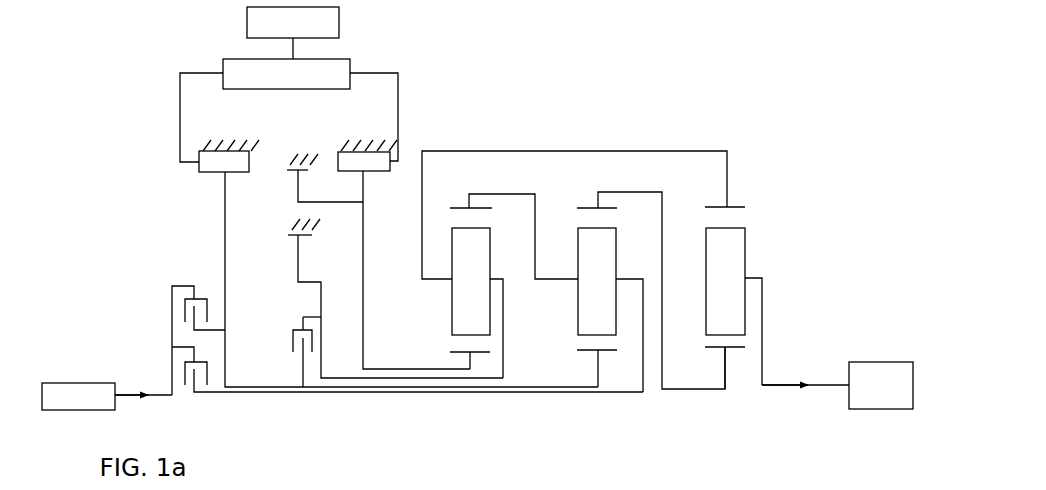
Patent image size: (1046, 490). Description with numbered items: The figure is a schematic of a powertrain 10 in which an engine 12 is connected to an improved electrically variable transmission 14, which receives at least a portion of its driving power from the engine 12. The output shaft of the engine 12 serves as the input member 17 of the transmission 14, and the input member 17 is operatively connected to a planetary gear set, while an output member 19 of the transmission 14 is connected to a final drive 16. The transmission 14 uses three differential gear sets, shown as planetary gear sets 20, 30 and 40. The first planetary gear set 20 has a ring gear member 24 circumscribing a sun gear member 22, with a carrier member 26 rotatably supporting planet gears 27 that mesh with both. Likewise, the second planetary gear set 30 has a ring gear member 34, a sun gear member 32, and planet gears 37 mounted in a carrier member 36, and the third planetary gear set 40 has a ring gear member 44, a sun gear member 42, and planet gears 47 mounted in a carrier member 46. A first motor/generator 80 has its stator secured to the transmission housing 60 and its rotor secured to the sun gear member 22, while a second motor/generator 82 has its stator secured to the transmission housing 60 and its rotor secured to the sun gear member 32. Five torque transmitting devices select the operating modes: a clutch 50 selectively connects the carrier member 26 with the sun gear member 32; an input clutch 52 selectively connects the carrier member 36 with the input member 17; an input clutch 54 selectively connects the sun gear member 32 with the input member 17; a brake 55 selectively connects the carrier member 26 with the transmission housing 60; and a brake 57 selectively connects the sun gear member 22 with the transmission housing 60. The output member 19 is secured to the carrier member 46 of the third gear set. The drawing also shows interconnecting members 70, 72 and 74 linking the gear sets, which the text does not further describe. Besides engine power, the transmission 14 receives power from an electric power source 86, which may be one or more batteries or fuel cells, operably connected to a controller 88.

The powertrain 10 is at (100, 170).
The engine 12 is at (72, 383).
The electrically variable transmission 14 is at (100, 222).
The final drive 16 is at (873, 361).
The input member 17 is at (125, 394).
The output member 19 is at (787, 388).
The first planetary gear set 20 is at (468, 355).
The sun gear member 22 is at (474, 355).
The ring gear member 24 is at (451, 207).
The carrier member 26 is at (492, 272).
The planet gears 27 is at (471, 281).
The second planetary gear set 30 is at (595, 355).
The sun gear member 32 is at (601, 353).
The ring gear member 34 is at (580, 207).
The carrier member 36 is at (619, 272).
The planet gears 37 is at (597, 281).
The third planetary gear set 40 is at (721, 352).
The sun gear member 42 is at (738, 350).
The ring gear member 44 is at (707, 206).
The carrier member 46 is at (749, 272).
The planet gears 47 is at (725, 281).
The clutch 50 is at (299, 354).
The input clutch 52 is at (189, 392).
The input clutch 54 is at (190, 322).
The brake 55 is at (316, 236).
The brake 57 is at (285, 172).
The transmission housing 60 is at (199, 148).
The first interconnecting member 70 is at (519, 193).
The second interconnecting member 72 is at (540, 150).
The third interconnecting member 74 is at (623, 191).
The first motor/generator 80 is at (393, 167).
The second motor/generator 82 is at (197, 171).
The electric power source 86 is at (340, 22).
The controller 88 is at (350, 71).